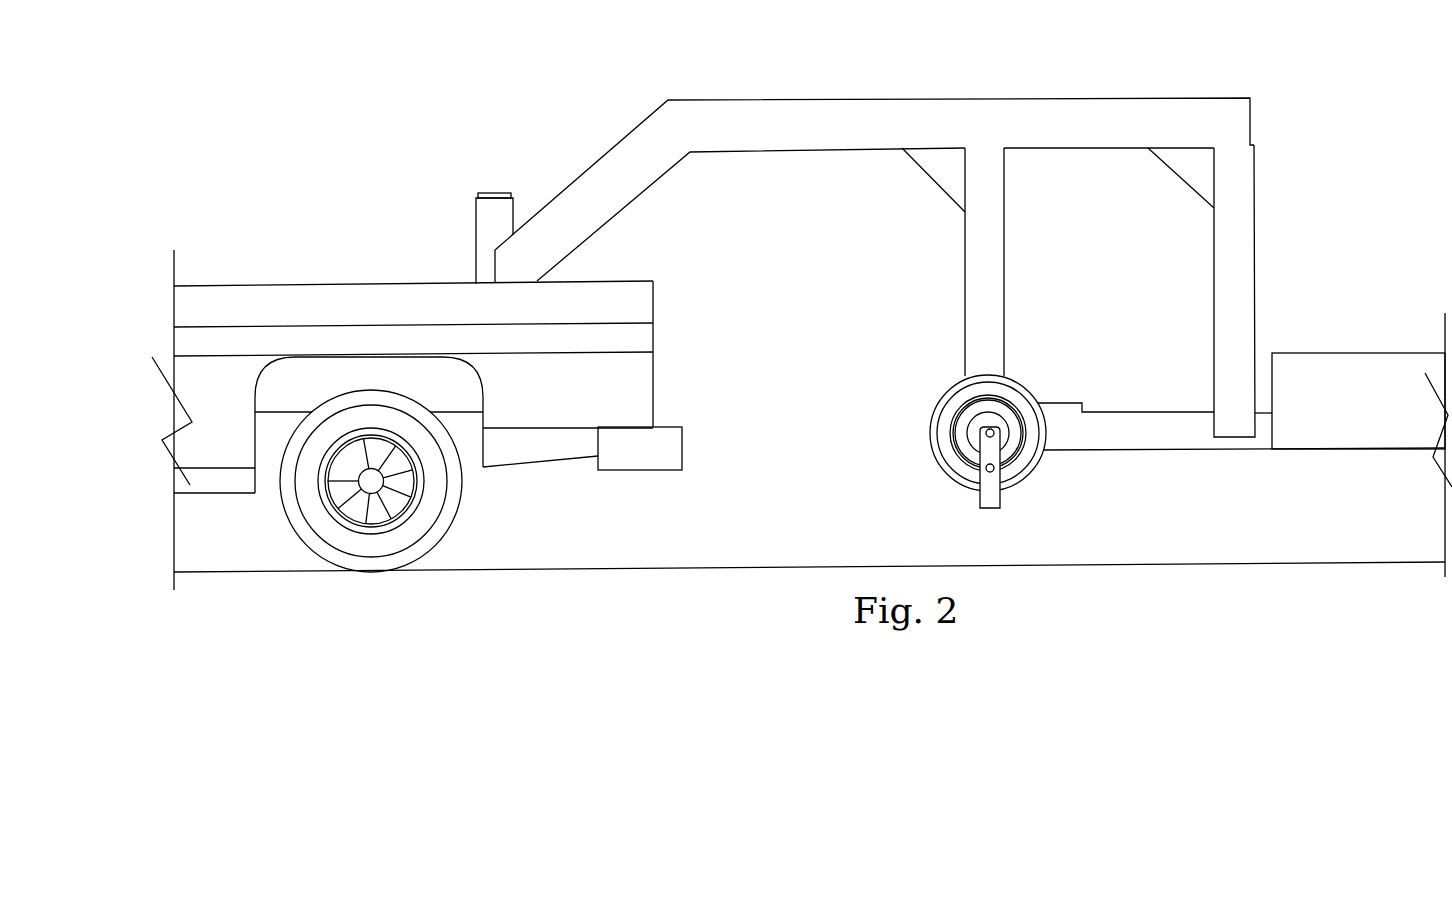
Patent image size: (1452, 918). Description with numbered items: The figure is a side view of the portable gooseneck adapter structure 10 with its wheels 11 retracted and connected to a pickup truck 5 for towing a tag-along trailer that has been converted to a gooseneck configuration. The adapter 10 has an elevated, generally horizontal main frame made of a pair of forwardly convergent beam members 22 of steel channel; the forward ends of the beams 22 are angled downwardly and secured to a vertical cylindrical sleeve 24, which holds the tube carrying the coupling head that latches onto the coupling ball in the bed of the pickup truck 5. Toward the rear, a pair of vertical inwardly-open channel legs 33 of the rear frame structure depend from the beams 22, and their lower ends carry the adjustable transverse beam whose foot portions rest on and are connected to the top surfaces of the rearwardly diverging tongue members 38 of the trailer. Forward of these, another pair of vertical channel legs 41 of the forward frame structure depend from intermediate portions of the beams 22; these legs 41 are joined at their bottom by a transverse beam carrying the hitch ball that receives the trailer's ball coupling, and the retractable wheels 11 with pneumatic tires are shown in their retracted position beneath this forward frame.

The pickup truck 5 is at (372, 268).
The portable gooseneck adapter structure 10 is at (778, 84).
The wheels 11 is at (947, 437).
The beam members 22 is at (1100, 113).
The vertical cylindrical sleeve 24 is at (493, 220).
The channel legs 33 is at (1230, 260).
The tongue members 38 is at (1152, 430).
The channel legs 41 is at (982, 285).